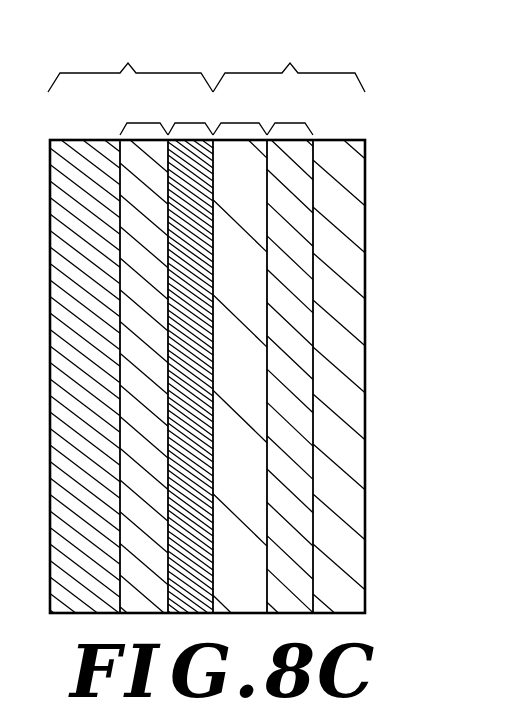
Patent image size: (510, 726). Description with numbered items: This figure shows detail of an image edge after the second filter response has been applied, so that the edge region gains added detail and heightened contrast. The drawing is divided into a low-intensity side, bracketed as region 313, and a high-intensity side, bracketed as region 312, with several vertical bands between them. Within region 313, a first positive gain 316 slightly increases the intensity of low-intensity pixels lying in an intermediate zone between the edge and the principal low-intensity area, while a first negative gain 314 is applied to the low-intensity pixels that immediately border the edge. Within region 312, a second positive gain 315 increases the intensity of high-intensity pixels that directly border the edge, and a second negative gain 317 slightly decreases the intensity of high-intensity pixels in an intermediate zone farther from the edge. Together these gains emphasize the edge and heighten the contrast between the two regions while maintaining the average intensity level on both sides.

The second layer stack 312 is at (289, 325).
The first layer stack 313 is at (130, 325).
The first negative gain 314 is at (188, 123).
The second positive gain 315 is at (242, 123).
The first positive gain 316 is at (143, 123).
The second negative gain 317 is at (289, 123).